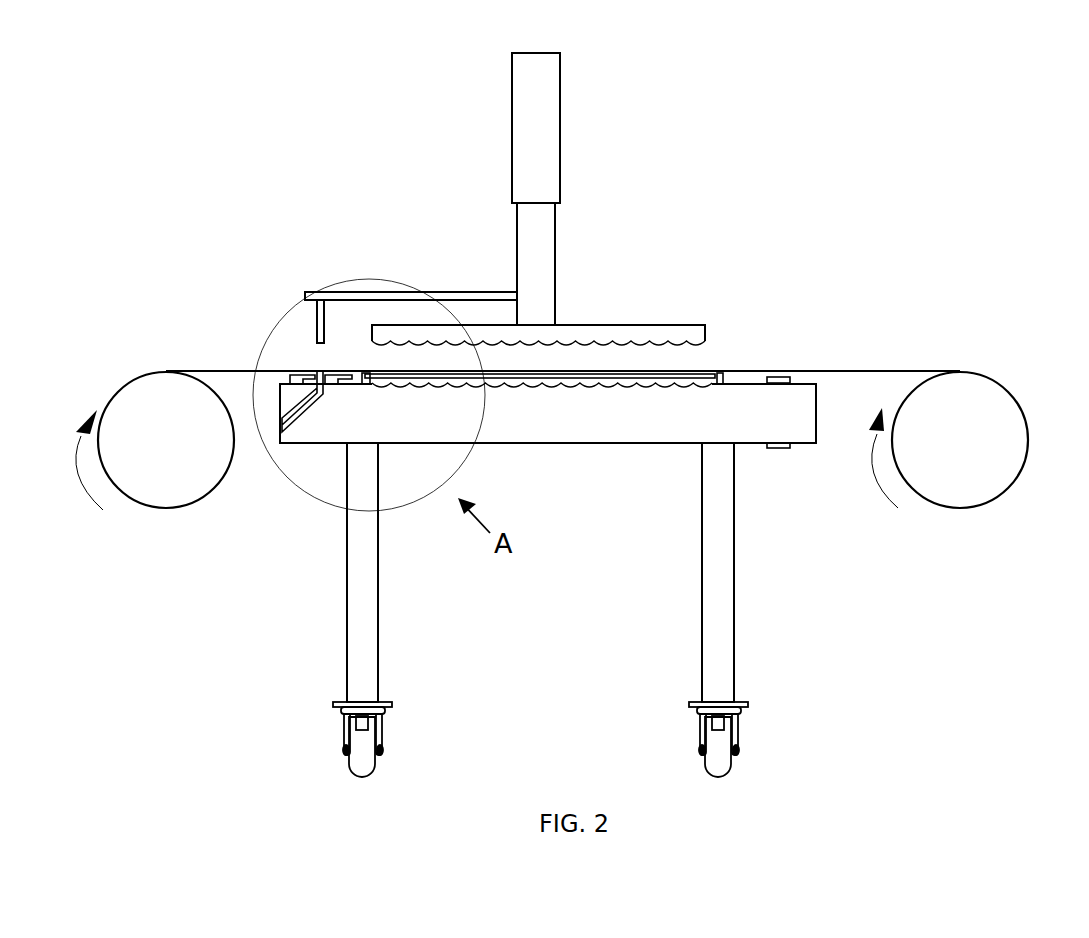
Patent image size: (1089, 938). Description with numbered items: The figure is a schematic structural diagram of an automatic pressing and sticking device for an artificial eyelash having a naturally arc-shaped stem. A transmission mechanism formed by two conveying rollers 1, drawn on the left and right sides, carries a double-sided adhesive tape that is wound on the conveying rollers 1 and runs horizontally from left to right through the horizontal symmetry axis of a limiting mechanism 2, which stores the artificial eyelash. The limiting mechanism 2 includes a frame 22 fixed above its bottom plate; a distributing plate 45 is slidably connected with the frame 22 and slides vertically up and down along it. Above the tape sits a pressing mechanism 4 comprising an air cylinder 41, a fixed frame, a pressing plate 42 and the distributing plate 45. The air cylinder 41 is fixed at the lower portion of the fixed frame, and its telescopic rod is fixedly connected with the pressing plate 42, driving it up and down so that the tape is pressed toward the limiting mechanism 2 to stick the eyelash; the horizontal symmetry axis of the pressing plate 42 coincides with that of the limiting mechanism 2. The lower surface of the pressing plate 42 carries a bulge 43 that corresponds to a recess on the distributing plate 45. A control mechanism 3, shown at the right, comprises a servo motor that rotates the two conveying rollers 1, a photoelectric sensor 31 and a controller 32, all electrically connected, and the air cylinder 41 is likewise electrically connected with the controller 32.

The conveying roller 1 is at (967, 417).
The limiting mechanism 2 is at (649, 410).
The frame 22 is at (725, 372).
The control mechanism 3 is at (869, 360).
The photoelectric sensor 31 is at (790, 378).
The controller 32 is at (790, 444).
The pressing mechanism 4 is at (528, 215).
The air cylinder 41 is at (540, 157).
The pressing plate 42 is at (580, 342).
The bulge 43 is at (500, 340).
The distributing plate 45 is at (558, 310).